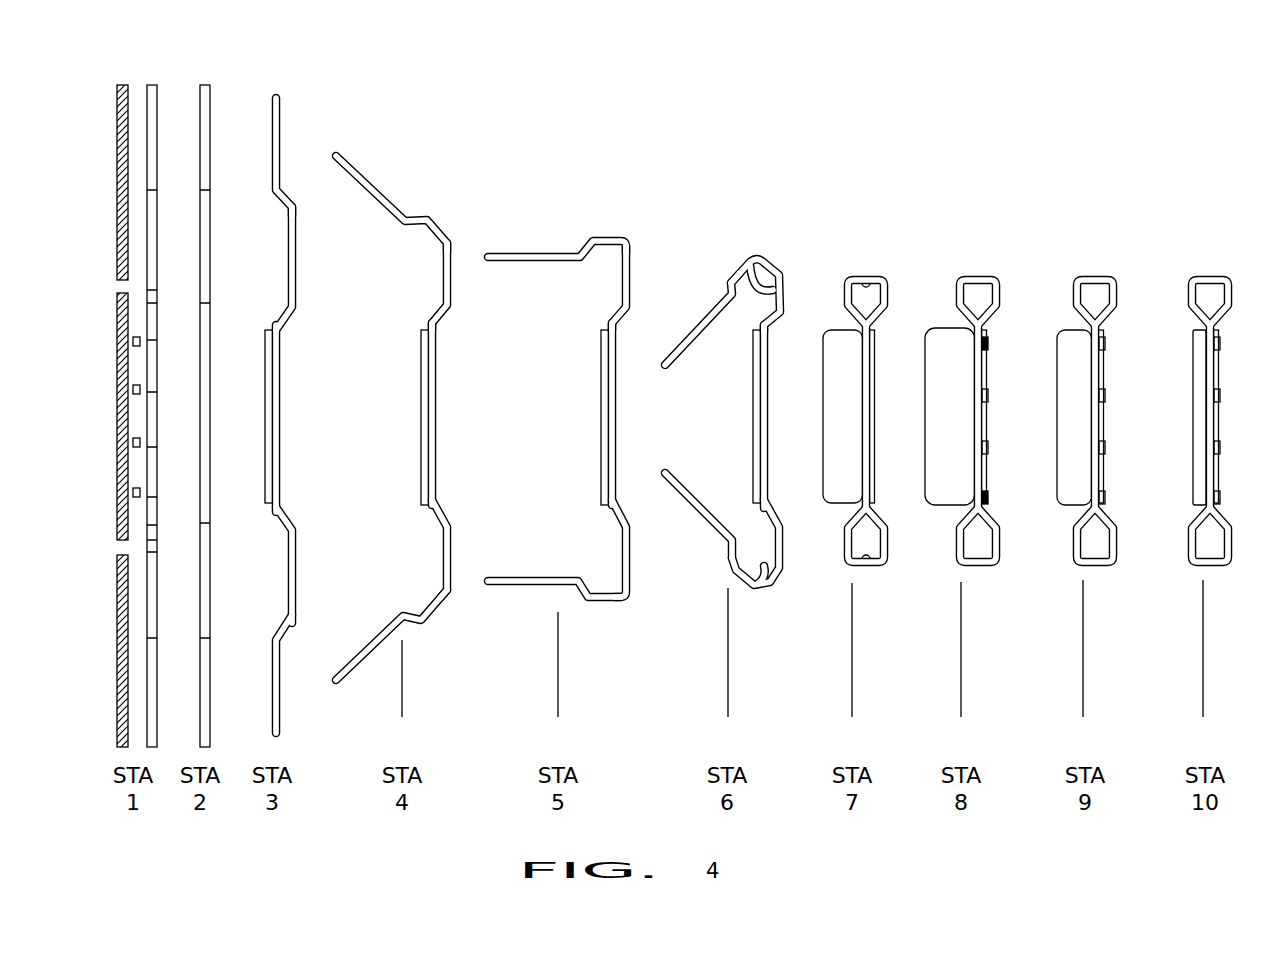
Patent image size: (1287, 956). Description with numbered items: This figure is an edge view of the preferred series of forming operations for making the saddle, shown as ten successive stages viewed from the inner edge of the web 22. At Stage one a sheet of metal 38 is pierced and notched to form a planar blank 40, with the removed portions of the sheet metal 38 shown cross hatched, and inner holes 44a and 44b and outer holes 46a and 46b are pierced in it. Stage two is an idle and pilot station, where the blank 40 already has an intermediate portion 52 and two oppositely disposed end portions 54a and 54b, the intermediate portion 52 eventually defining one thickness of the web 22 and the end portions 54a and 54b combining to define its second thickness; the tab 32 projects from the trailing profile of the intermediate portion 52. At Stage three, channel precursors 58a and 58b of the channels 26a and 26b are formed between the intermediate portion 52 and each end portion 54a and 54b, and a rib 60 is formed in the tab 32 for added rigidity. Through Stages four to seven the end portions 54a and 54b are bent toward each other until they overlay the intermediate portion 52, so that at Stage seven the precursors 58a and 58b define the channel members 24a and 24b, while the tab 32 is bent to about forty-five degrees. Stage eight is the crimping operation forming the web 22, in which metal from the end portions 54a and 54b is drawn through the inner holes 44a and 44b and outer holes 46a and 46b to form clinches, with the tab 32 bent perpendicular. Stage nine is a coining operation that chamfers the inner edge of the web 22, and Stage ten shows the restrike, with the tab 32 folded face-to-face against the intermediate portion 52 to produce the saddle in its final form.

The web 22 is at (1112, 424).
The channel member 24a is at (845, 553).
The channel member 24b is at (850, 277).
The channel 26a is at (867, 557).
The channel 26b is at (870, 282).
The tab 32 is at (258, 480).
The sheet of metal 38 is at (157, 98).
The planar blank 40 is at (210, 100).
The inner hole 44a is at (988, 448).
The inner hole 44b is at (988, 395).
The outer hole 46a is at (988, 497).
The outer hole 46b is at (988, 343).
The intermediate portion 52 is at (207, 379).
The end portion 54a is at (273, 712).
The end portion 54b is at (270, 176).
The channel precursor 58a is at (287, 595).
The channel precursor 58b is at (287, 273).
The rib 60 is at (267, 441).